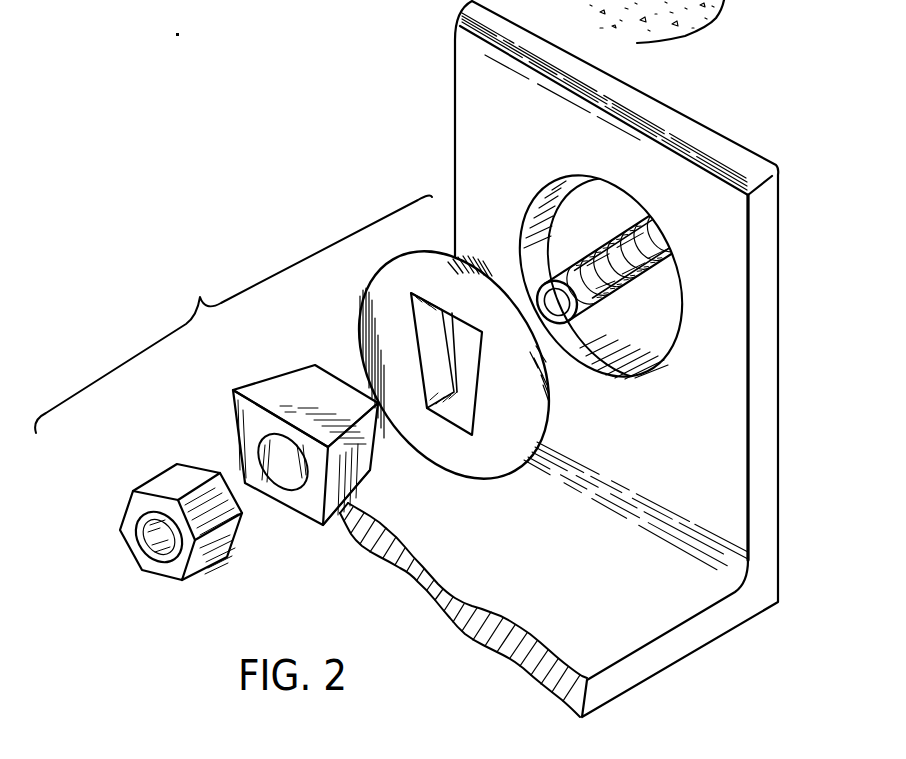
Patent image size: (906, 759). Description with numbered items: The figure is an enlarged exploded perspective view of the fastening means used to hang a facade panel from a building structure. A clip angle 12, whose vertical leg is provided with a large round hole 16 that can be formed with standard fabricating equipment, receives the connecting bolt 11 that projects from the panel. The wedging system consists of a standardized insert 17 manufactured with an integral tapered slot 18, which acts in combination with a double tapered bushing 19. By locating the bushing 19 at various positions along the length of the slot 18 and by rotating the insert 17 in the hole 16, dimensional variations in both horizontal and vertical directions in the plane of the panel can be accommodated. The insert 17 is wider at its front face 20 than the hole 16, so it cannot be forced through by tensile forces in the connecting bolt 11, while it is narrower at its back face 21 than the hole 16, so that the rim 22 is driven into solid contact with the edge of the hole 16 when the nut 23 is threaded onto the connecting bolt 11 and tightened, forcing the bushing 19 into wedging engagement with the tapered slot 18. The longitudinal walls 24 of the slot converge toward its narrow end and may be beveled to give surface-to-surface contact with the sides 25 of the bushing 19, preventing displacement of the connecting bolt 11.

The connecting bolt 11 is at (620, 233).
The clip angle 12 is at (483, 92).
The round hole 16 is at (663, 305).
The insert 17 is at (498, 475).
The tapered slot 18 is at (470, 353).
The double tapered bushing 19 is at (310, 387).
The front face 20 is at (385, 287).
The back face 21 is at (508, 281).
The rim 22 is at (480, 270).
The nut 23 is at (170, 485).
The longitudinal walls 24 is at (435, 353).
The sides 25 is at (360, 452).